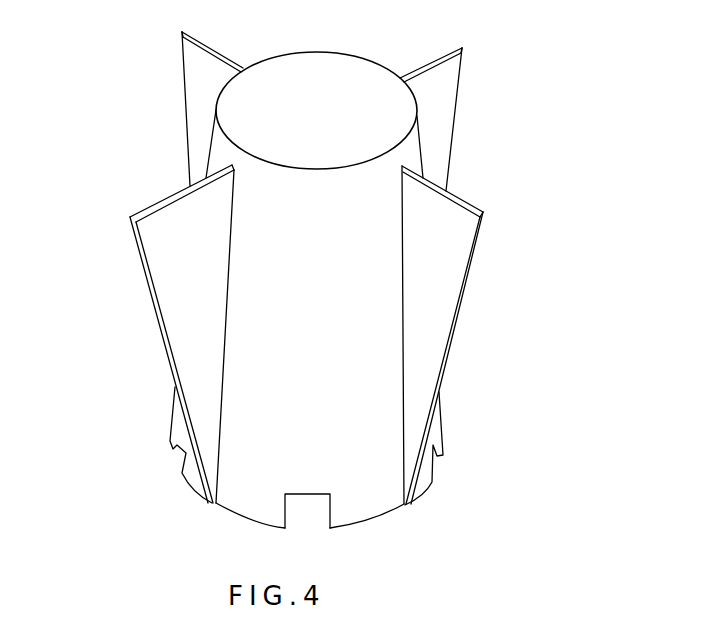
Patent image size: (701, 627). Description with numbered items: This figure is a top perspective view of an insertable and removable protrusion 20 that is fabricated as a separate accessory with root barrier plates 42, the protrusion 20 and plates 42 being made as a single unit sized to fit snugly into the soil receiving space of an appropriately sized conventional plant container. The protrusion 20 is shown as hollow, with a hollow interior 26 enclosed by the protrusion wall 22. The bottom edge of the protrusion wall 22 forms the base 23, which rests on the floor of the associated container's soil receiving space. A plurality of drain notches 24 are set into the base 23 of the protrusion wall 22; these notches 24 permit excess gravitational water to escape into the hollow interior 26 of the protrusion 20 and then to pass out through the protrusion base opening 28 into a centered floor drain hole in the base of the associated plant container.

The protrusion 20 is at (348, 32).
The protrusion wall 22 is at (372, 333).
The base 23 is at (200, 500).
The drain notch 24 is at (440, 464).
The hollow interior 26 is at (296, 506).
The protrusion base opening 28 is at (177, 462).
The root barrier plates 42 is at (192, 90).